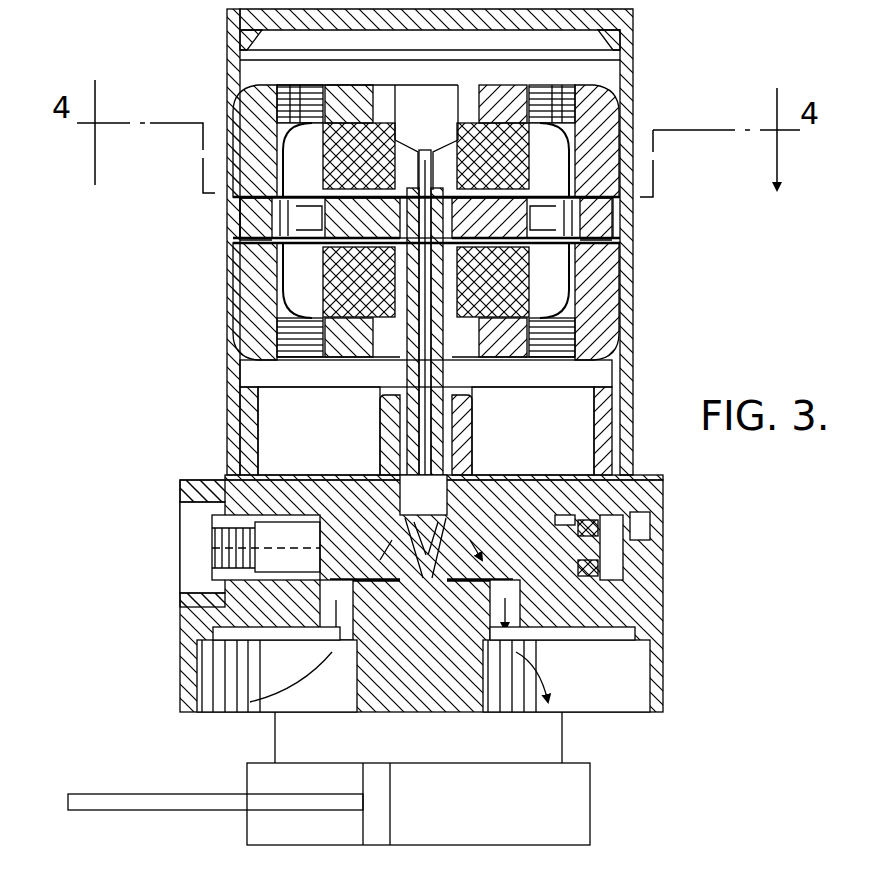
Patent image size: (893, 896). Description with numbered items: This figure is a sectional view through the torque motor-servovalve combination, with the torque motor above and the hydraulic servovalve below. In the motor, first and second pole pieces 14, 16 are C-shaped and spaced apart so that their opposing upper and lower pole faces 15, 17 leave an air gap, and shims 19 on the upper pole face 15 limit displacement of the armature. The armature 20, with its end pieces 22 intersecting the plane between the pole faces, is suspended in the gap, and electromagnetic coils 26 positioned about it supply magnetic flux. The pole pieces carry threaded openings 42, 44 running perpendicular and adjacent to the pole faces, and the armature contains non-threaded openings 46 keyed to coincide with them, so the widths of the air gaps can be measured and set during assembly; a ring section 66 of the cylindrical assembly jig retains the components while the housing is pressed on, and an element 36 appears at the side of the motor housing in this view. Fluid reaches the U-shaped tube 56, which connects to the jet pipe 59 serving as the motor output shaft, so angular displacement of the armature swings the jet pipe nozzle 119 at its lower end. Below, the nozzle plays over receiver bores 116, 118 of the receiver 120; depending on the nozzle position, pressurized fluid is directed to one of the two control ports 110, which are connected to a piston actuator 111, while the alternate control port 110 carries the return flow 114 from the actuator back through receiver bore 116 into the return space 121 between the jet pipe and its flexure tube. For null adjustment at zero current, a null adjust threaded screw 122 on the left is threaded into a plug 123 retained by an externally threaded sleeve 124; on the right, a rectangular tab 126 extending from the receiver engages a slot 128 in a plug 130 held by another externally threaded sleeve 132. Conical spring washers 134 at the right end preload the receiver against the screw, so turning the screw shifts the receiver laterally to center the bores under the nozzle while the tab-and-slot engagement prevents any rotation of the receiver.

The first pole piece 14 is at (488, 92).
The upper pole face 15 is at (232, 150).
The second pole piece 16 is at (633, 335).
The lower pole face 17 is at (238, 272).
The shims 19 is at (230, 170).
The armature 20 is at (238, 232).
The end pieces 22 is at (238, 210).
The electromagnetic coils 26 is at (250, 300).
The housing wall 36 is at (240, 338).
The threaded opening 42 is at (232, 97).
The threaded opening 44 is at (318, 378).
The non-threaded openings 46 is at (240, 246).
The U-shaped tube 56 is at (432, 150).
The jet pipe 59 is at (395, 455).
The ring section 66 is at (240, 380).
The control ports 110 is at (245, 665).
The piston actuator 111 is at (612, 770).
The return flow 114 is at (275, 728).
The receiver bore 116 is at (407, 580).
The receiver bore 118 is at (432, 582).
The jet pipe nozzle 119 is at (455, 470).
The receiver 120 is at (512, 518).
The return space 121 is at (440, 505).
The null adjust threaded screw 122 is at (215, 527).
The plug 123 is at (200, 590).
The externally threaded sleeve 124 is at (200, 497).
The rectangular tab 126 is at (625, 565).
The slot 128 is at (600, 530).
The plug 130 is at (640, 522).
The externally threaded sleeve 132 is at (625, 500).
The conical spring washers 134 is at (600, 570).